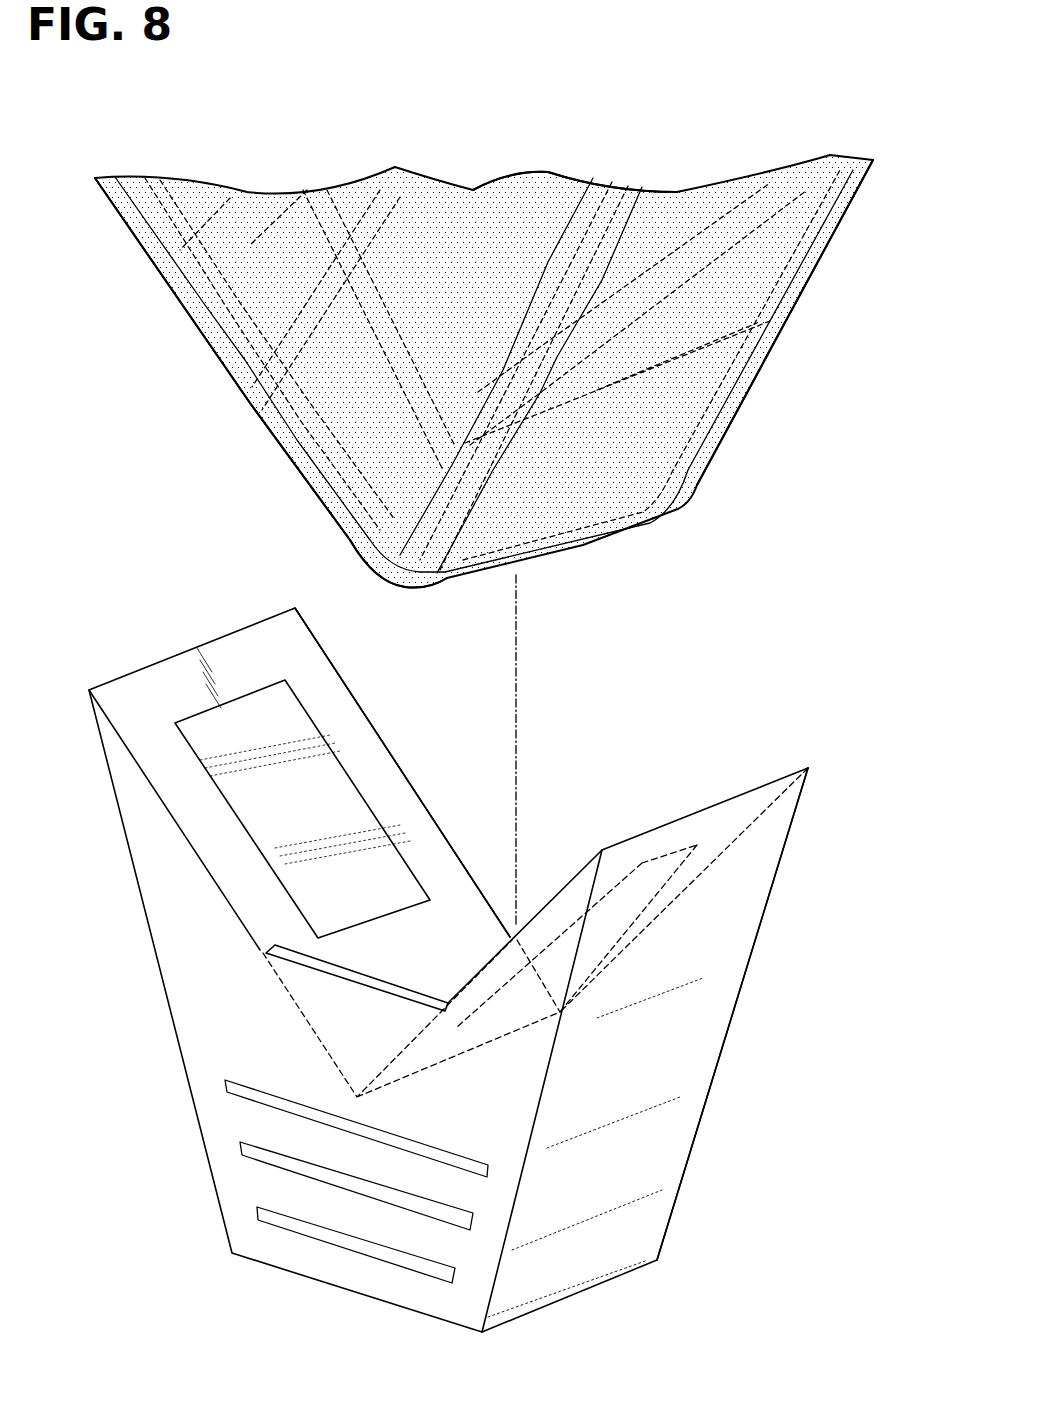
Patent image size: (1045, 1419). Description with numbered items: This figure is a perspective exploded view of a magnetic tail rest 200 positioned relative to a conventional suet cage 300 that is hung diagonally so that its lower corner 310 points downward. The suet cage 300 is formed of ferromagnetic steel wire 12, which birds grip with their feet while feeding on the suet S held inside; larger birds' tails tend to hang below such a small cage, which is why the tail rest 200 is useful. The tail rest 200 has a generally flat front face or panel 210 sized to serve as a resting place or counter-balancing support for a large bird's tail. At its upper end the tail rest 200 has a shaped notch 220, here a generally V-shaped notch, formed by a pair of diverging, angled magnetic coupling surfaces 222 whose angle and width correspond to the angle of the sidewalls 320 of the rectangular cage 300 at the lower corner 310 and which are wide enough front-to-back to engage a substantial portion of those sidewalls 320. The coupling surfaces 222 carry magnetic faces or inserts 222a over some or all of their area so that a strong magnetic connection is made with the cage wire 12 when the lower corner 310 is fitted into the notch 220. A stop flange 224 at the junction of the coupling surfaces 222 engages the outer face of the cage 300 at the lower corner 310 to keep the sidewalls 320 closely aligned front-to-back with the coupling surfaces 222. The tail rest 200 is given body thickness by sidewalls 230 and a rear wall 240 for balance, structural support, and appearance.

The wire 12 is at (390, 226).
The suet S is at (558, 202).
The suet cage 300 is at (782, 325).
The lower corner 310 is at (420, 592).
The sidewalls 320 is at (268, 428).
The tail rest 200 is at (733, 1147).
The front face or panel 210 is at (235, 1000).
The shaped notch 220 is at (543, 787).
The magnetic coupling surfaces 222 is at (240, 868).
The magnetic faces or inserts 222a is at (337, 825).
The stop flange 224 is at (397, 998).
The sidewalls 230 is at (155, 957).
The rear wall 240 is at (447, 832).